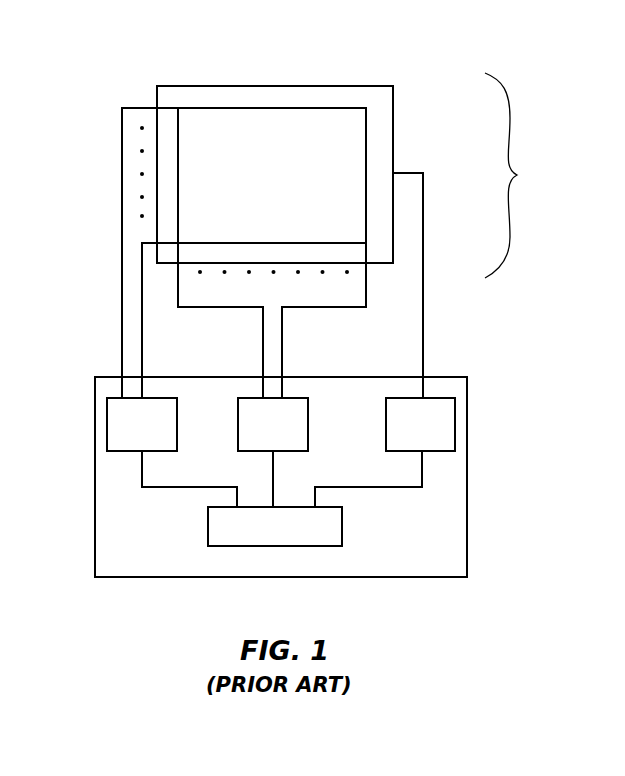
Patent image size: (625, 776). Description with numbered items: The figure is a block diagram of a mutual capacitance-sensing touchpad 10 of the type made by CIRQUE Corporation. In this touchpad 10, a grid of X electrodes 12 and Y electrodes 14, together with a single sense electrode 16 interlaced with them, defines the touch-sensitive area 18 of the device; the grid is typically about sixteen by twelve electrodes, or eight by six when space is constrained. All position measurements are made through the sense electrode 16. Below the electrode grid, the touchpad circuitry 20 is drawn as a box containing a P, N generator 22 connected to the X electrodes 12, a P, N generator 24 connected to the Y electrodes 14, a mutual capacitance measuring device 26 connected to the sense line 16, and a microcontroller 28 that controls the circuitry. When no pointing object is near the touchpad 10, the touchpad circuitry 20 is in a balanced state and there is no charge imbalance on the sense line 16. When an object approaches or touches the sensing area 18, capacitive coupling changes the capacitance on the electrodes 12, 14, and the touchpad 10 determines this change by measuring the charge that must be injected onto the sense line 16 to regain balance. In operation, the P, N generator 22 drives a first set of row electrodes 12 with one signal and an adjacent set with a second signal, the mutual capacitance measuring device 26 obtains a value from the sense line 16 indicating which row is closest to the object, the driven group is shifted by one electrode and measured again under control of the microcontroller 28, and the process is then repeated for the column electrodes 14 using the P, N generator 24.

The touchpad 10 is at (376, 80).
The X electrodes 12 is at (132, 248).
The Y electrodes 14 is at (372, 320).
The sense electrode 16 is at (423, 190).
The touch-sensitive area 18 is at (515, 175).
The touchpad circuitry 20 is at (468, 483).
The P, N generator 22 is at (107, 420).
The P, N generator 24 is at (308, 423).
The mutual capacitance measuring device 26 is at (385, 428).
The microcontroller 28 is at (342, 524).